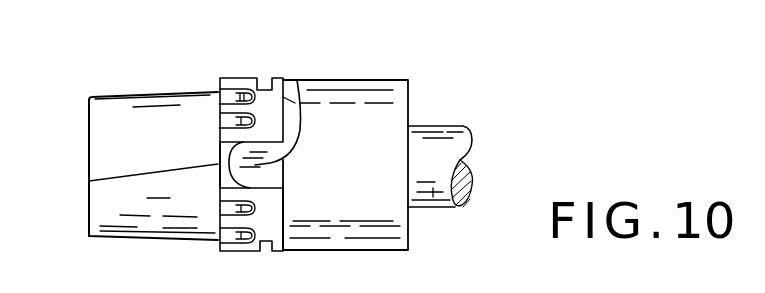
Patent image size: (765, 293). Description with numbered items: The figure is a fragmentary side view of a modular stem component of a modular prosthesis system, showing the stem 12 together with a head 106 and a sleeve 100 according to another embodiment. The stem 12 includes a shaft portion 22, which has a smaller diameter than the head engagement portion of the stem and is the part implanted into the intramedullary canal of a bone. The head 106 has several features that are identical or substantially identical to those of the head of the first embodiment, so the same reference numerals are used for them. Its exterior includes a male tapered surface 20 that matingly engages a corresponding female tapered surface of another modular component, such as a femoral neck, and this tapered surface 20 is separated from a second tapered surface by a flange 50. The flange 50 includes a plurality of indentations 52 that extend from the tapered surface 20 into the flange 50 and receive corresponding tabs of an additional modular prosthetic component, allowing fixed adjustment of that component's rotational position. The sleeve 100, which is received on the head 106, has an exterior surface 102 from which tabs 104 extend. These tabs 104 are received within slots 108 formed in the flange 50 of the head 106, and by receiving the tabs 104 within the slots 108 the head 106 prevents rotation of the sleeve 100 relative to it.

The stem 12 is at (460, 100).
The tapered surface 20 is at (150, 221).
The shaft portion 22 is at (433, 195).
The flange 50 is at (245, 75).
The indentations 52 is at (238, 100).
The sleeve 100 is at (346, 78).
The exterior surface 102 is at (338, 226).
The tabs 104 is at (297, 80).
The head 106 is at (112, 80).
The slots 108 is at (90, 181).